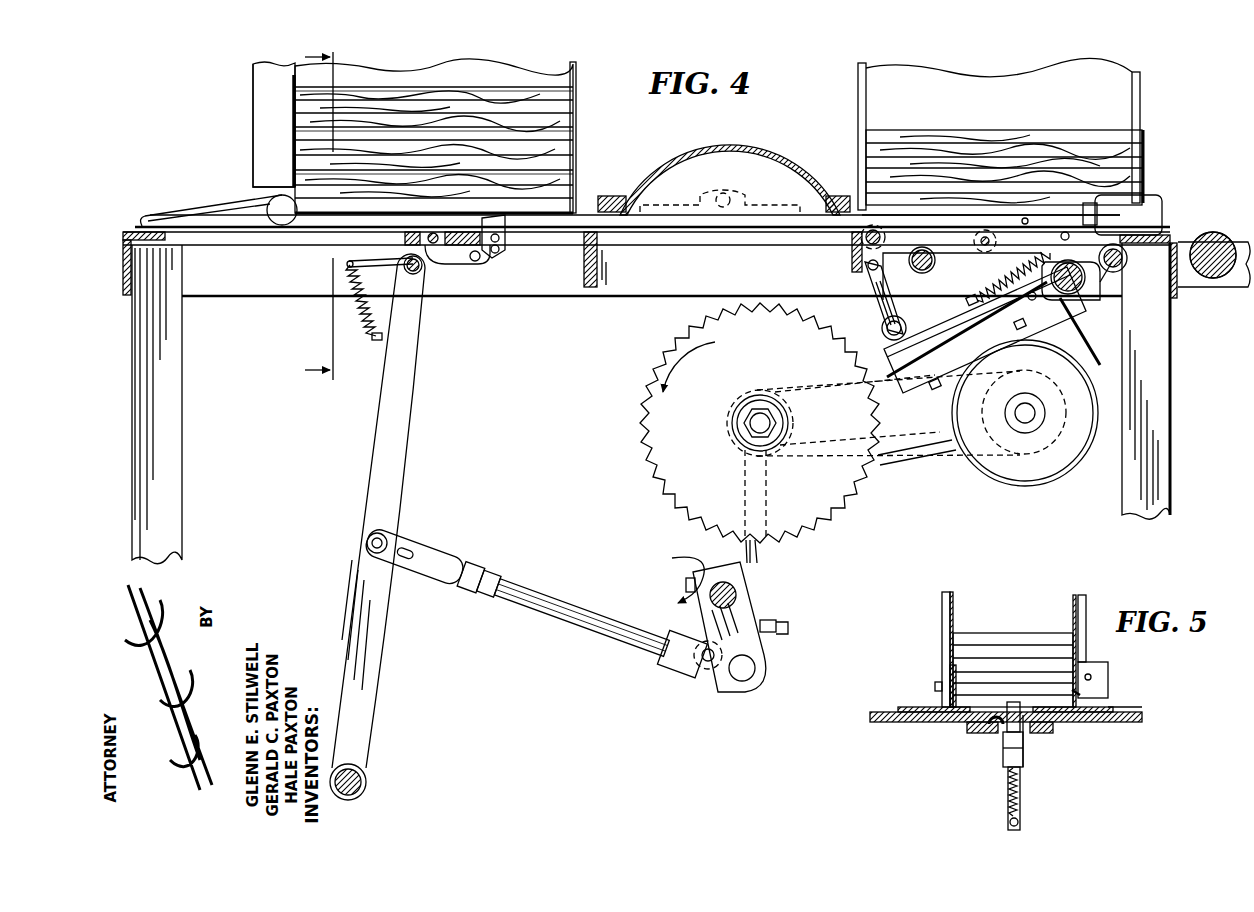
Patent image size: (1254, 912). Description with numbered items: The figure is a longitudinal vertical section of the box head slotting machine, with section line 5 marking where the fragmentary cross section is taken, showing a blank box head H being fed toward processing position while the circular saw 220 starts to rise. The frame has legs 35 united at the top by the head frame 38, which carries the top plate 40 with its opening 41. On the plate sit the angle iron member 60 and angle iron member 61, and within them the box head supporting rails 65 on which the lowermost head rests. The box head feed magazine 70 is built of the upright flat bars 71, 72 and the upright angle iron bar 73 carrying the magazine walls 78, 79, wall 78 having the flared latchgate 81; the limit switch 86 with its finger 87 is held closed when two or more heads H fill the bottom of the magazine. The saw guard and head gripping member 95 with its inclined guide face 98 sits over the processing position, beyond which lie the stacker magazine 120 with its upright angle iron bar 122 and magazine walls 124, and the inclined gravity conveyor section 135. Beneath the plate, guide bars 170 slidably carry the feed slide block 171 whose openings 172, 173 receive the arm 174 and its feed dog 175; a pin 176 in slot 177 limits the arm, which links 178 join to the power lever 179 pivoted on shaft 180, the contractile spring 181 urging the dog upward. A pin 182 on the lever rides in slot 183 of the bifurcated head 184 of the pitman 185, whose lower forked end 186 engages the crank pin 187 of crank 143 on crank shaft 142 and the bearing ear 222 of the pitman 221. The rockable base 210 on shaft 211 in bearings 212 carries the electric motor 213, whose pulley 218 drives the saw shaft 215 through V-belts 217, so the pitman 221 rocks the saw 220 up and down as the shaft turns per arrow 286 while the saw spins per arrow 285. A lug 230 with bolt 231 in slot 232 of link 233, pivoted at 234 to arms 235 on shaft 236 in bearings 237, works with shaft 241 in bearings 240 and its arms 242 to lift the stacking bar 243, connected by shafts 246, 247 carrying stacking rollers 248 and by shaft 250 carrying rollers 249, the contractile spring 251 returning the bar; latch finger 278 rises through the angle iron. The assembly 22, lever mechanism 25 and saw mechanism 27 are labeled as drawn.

In FIG. 4, the section line 5 is at (312, 215).
In FIG. 4, the infeed lumber stack 22 is at (240, 141).
In FIG. 4, the feed lever assembly 25 is at (379, 511).
In FIG. 4, the saw assembly 27 is at (731, 423).
In FIG. 4, the legs 35 is at (162, 420).
In FIG. 4, the head frame 38 is at (238, 296).
In FIG. 5, the top plate 40 is at (912, 724).
In FIG. 5, the opening 41 is at (992, 728).
In FIG. 5, the angle iron member 60 is at (920, 706).
In FIG. 5, the angle iron member 61 is at (1100, 722).
In FIG. 4, the box head supporting rails 65 is at (230, 226).
In FIG. 5, the box head feed magazine 70 is at (1026, 629).
In FIG. 5, the upright flat bar 71 is at (942, 640).
In FIG. 5, the upright flat bar 72 is at (1086, 640).
In FIG. 4, the upright angle iron bar 73 is at (578, 88).
In FIG. 4, the magazine wall 78 is at (300, 74).
In FIG. 5, the magazine wall 78 is at (955, 606).
In FIG. 5, the magazine wall 79 is at (1072, 602).
In FIG. 4, the flared latchgate 81 is at (262, 106).
In FIG. 5, the limit switch 86 is at (1100, 676).
In FIG. 5, the finger 87 is at (1095, 688).
In FIG. 4, the saw guard and head gripping member 95 is at (736, 150).
In FIG. 4, the upwardly inclined guide face 98 is at (598, 196).
In FIG. 4, the stacker magazine 120 is at (1150, 88).
In FIG. 4, the upright angle iron bar 122 is at (858, 80).
In FIG. 4, the magazine walls 124 is at (1105, 112).
In FIG. 4, the inclined gravity conveyor section 135 is at (1216, 280).
In FIG. 4, the crank shaft 142 is at (712, 604).
In FIG. 4, the crank 143 is at (752, 648).
In FIG. 5, the guide bars 170 is at (972, 733).
In FIG. 4, the feed slide block 171 is at (422, 268).
In FIG. 5, the feed slide block 171 is at (1025, 730).
In FIG. 4, the opening 172 is at (458, 232).
In FIG. 4, the opening 173 is at (489, 227).
In FIG. 4, the arm 174 is at (468, 260).
In FIG. 4, the feed dog 175 is at (500, 232).
In FIG. 5, the feed dog 175 is at (1015, 702).
In FIG. 4, the pin 176 is at (480, 260).
In FIG. 4, the slot 177 is at (500, 250).
In FIG. 4, the links 178 is at (444, 272).
In FIG. 5, the links 178 is at (1003, 762).
In FIG. 4, the power lever 179 is at (410, 390).
In FIG. 5, the power lever 179 is at (1006, 820).
In FIG. 4, the shaft 180 is at (362, 778).
In FIG. 4, the contractile spring 181 is at (350, 312).
In FIG. 5, the contractile spring 181 is at (1006, 795).
In FIG. 4, the pin 182 is at (366, 543).
In FIG. 4, the slot 183 is at (408, 546).
In FIG. 4, the bifurcated head 184 is at (447, 560).
In FIG. 4, the pitman 185 is at (522, 588).
In FIG. 4, the lower forked end 186 is at (680, 655).
In FIG. 4, the crank pin 187 is at (742, 681).
In FIG. 4, the rockable base 210 is at (892, 380).
In FIG. 4, the shaft 211 is at (1078, 292).
In FIG. 4, the bearings 212 is at (1102, 282).
In FIG. 4, the electric motor 213 is at (1023, 470).
In FIG. 4, the saw shaft 215 is at (750, 435).
In FIG. 4, the V-belts 217 is at (932, 450).
In FIG. 4, the pulley 218 is at (1050, 440).
In FIG. 4, the circular saw 220 is at (650, 430).
In FIG. 4, the pitman 221 is at (758, 566).
In FIG. 4, the bearing ear 222 is at (712, 672).
In FIG. 4, the lug 230 is at (950, 300).
In FIG. 4, the bolt 231 is at (882, 330).
In FIG. 4, the slot 232 is at (886, 303).
In FIG. 4, the link 233 is at (896, 305).
In FIG. 4, the pivot 234 is at (866, 270).
In FIG. 4, the arms 235 is at (919, 266).
In FIG. 4, the shaft 236 is at (933, 258).
In FIG. 4, the bearings 237 is at (934, 266).
In FIG. 4, the bearings 240 is at (1124, 256).
In FIG. 4, the shaft 241 is at (1125, 265).
In FIG. 4, the arms 242 is at (1110, 244).
In FIG. 4, the stacking bar 243 is at (1035, 224).
In FIG. 4, the shaft 246 is at (878, 235).
In FIG. 4, the shaft 247 is at (1066, 232).
In FIG. 4, the stacking rollers 248 is at (850, 254).
In FIG. 4, the rollers 249 is at (997, 241).
In FIG. 4, the shaft 250 is at (980, 241).
In FIG. 4, the contractile spring 251 is at (1013, 275).
In FIG. 4, the latch finger 278 is at (1162, 208).
In FIG. 4, the arrow 285 is at (660, 350).
In FIG. 4, the arrow 286 is at (672, 574).
In FIG. 4, the blank box heads H is at (602, 259).